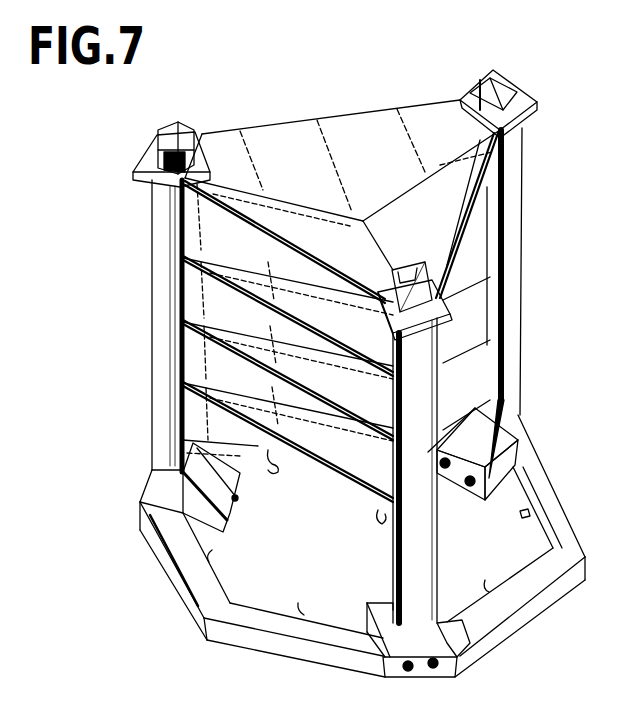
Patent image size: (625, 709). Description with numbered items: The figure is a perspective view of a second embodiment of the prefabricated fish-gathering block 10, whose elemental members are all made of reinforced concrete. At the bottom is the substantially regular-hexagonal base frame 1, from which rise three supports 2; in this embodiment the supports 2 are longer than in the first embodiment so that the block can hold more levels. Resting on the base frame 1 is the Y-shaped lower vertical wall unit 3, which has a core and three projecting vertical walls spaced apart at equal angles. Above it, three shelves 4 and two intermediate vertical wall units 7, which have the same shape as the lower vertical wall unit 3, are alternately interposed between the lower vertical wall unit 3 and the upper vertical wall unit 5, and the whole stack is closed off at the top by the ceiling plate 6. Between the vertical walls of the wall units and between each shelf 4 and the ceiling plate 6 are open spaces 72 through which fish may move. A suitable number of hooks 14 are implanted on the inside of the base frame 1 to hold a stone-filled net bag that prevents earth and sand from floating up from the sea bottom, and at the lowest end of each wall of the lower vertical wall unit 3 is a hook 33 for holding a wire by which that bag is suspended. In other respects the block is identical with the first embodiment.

The base frame 1 is at (555, 466).
The supports 2 is at (150, 392).
The lower vertical wall unit 3 is at (195, 421).
The shelf 4 is at (262, 279).
The upper vertical wall unit 5 is at (193, 228).
The ceiling plate 6 is at (280, 143).
The intermediate vertical wall units 7 is at (195, 286).
The fish-gathering block 10 is at (346, 350).
The hooks 14 is at (213, 552).
The hook 33 is at (274, 474).
The spaces 72 is at (357, 328).